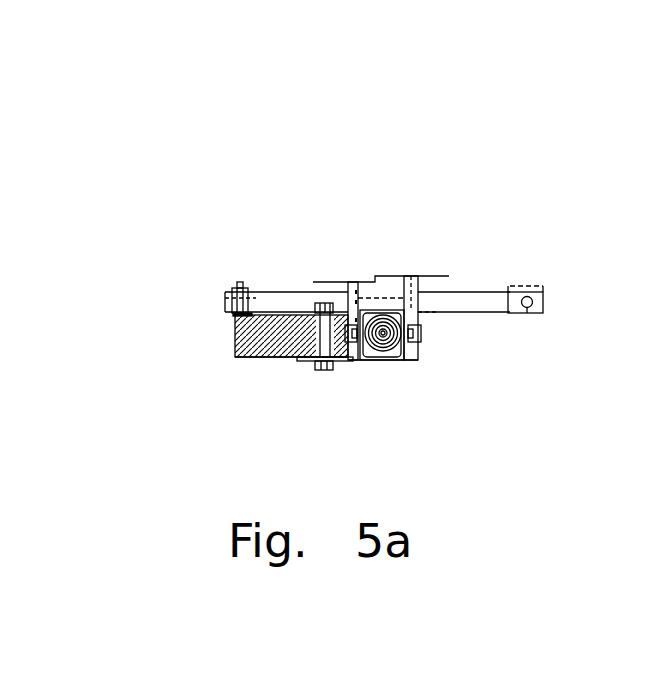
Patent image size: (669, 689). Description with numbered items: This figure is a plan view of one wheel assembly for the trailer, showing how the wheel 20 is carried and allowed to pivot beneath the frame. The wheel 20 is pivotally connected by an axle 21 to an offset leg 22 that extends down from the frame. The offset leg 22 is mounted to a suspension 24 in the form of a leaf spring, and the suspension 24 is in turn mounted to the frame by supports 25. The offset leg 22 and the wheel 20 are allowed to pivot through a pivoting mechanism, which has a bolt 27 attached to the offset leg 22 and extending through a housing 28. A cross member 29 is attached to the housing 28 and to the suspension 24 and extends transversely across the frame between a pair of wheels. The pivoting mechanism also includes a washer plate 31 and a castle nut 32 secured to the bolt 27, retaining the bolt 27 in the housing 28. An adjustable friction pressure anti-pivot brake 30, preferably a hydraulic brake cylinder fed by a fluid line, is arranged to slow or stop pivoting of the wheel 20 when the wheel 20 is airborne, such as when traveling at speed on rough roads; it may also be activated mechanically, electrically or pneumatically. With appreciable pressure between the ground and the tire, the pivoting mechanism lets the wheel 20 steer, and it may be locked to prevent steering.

The wheel 20 is at (245, 338).
The axle 21 is at (292, 352).
The offset leg 22 is at (303, 365).
The suspension 24 is at (495, 296).
The supports 25 is at (225, 307).
The bolt 27 is at (380, 334).
The housing 28 is at (407, 357).
The cross member 29 is at (420, 280).
The adjustable friction pressure anti-pivot brake 30 is at (528, 313).
The washer plate 31 is at (421, 338).
The castle nut 32 is at (378, 334).